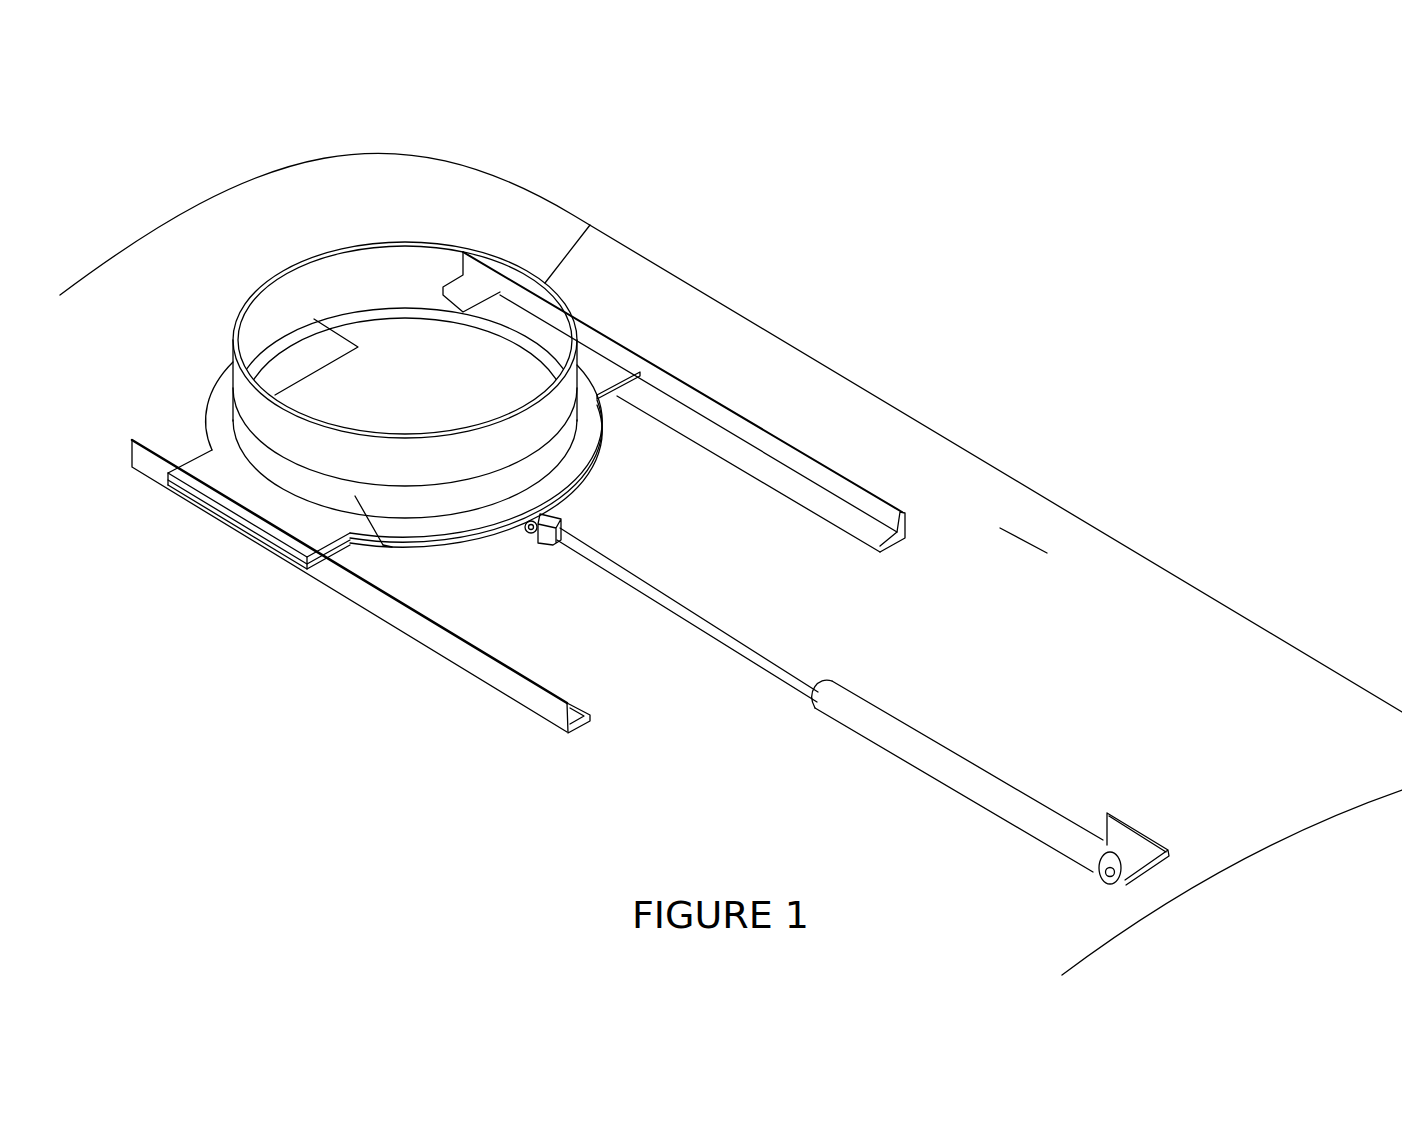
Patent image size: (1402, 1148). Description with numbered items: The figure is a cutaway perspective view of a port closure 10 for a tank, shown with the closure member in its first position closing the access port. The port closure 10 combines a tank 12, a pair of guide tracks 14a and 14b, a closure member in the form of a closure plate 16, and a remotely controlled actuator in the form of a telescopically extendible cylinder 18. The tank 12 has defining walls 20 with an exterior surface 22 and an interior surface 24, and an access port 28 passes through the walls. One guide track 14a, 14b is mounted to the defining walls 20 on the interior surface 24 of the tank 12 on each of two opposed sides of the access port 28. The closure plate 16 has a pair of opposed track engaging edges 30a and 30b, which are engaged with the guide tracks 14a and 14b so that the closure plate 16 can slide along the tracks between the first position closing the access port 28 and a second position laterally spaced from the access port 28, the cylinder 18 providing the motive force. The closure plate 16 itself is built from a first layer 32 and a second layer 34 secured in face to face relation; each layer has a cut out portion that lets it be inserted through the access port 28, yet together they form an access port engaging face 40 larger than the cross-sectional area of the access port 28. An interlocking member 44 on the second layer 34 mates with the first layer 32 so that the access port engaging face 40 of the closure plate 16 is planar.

The port closure 10 is at (262, 158).
The tank 12 is at (910, 392).
The guide track 14a is at (737, 428).
The guide track 14b is at (455, 648).
The closure plate 16 is at (430, 275).
The telescopically extendible cylinder 18 is at (963, 766).
The defining walls 20 is at (453, 160).
The exterior surface 22 is at (995, 490).
The interior surface 24 is at (1047, 553).
The access port 28 is at (548, 277).
The track engaging edge 30a is at (600, 357).
The track engaging edge 30b is at (217, 473).
The first layer 32 is at (355, 496).
The second layer 34 is at (393, 548).
The access port engaging face 40 is at (392, 352).
The interlocking member 44 is at (285, 363).